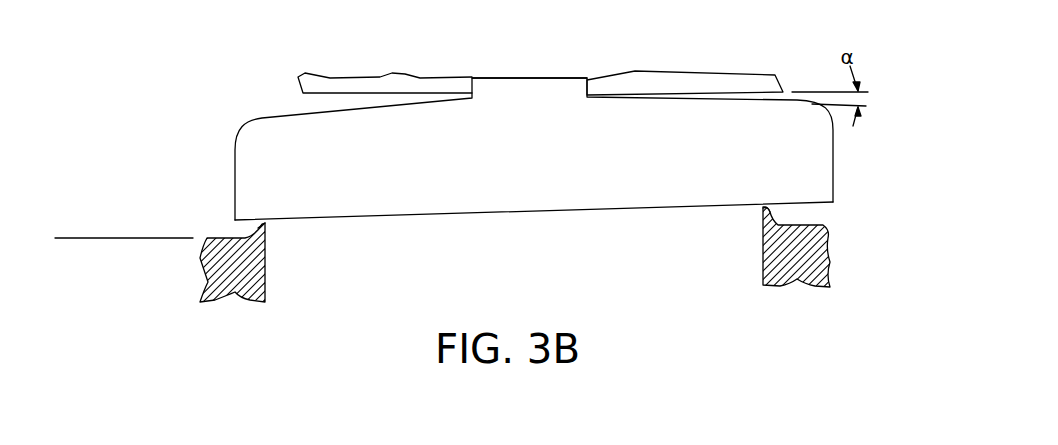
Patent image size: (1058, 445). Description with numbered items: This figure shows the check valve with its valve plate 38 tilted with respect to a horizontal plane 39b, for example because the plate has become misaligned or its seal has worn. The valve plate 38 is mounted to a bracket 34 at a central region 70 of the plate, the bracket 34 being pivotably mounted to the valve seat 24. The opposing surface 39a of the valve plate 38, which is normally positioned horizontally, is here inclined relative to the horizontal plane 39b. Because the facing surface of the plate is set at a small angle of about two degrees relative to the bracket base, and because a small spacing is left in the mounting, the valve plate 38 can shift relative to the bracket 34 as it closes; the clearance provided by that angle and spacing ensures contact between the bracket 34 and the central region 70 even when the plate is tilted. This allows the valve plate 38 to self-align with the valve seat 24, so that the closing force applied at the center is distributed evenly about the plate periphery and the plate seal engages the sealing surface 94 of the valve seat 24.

The valve seat 24 is at (832, 248).
The bracket 34 is at (657, 71).
The valve plate 38 is at (822, 112).
The opposing surface 39a is at (520, 211).
The horizontal plane 39b is at (108, 238).
The central region 70 is at (424, 54).
The sealing surface 94 is at (266, 224).